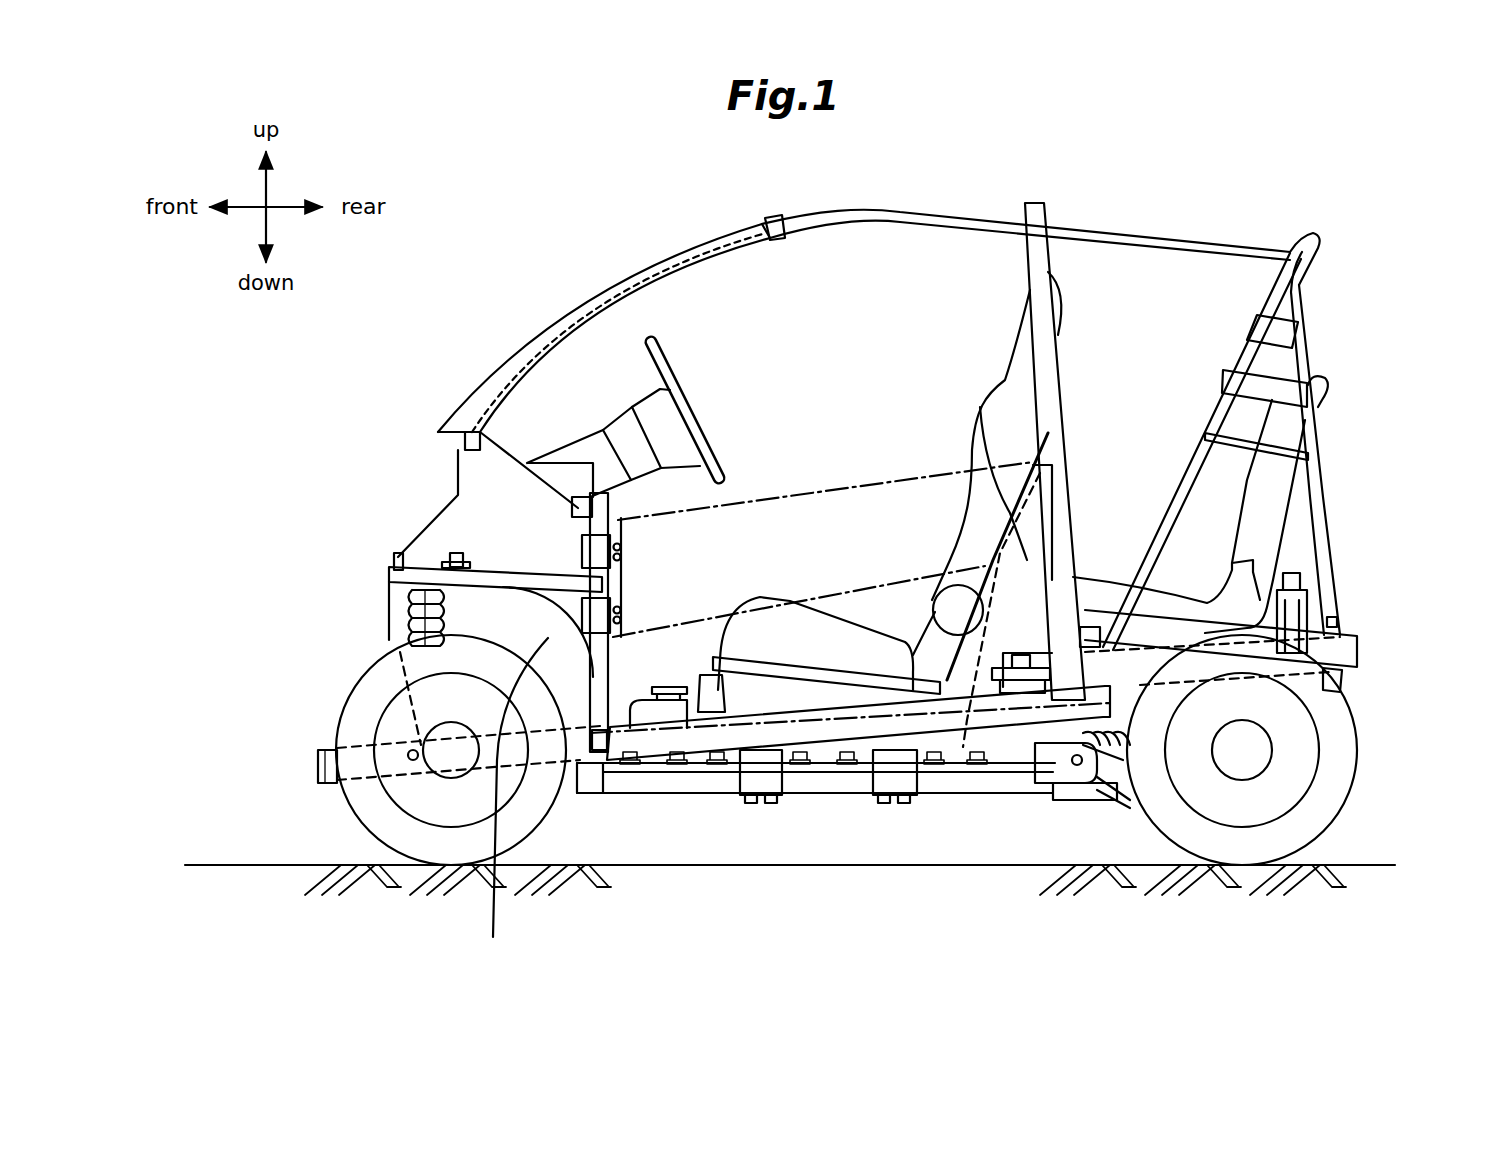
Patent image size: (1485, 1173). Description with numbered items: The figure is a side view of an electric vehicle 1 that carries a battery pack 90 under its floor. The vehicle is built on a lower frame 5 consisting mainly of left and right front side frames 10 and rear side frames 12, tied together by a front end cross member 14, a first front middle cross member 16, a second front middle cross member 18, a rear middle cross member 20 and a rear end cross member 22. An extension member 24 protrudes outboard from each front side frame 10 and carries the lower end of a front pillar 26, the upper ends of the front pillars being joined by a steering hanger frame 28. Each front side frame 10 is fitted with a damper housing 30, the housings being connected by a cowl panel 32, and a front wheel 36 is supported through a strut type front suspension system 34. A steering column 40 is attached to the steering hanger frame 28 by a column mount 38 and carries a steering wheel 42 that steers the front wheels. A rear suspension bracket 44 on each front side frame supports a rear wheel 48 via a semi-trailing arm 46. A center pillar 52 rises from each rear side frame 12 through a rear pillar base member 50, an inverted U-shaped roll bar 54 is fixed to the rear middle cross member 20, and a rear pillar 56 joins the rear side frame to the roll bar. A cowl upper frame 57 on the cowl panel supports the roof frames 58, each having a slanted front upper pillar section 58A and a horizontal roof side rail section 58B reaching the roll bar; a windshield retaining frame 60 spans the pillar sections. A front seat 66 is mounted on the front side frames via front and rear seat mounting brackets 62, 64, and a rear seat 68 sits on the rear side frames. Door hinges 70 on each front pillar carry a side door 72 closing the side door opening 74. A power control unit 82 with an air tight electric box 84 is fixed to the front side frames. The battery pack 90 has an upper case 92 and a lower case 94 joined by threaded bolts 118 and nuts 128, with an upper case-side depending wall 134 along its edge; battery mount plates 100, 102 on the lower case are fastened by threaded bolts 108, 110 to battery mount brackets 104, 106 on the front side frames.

The electric vehicle 1 is at (1187, 170).
The lower frame 5 is at (962, 737).
The front side frame 10 is at (670, 740).
The rear side frame 12 is at (1345, 655).
The front end cross member 14 is at (318, 768).
The first front middle cross member 16 is at (414, 762).
The second front middle cross member 18 is at (583, 780).
The rear middle cross member 20 is at (1090, 640).
The rear end cross member 22 is at (1345, 675).
The extension member 24 is at (614, 770).
The front pillar 26 is at (600, 680).
The steering hanger frame 28 is at (592, 505).
The damper housing 30 is at (513, 794).
The cowl panel 32 is at (452, 530).
The strut type front suspension system 34 is at (427, 630).
The front wheel 36 is at (355, 694).
The column mount 38 is at (550, 475).
The steering column 40 is at (622, 428).
The steering wheel 42 is at (668, 352).
The rear suspension bracket 44 is at (1040, 790).
The semi-trailing arm 46 is at (1125, 797).
The rear wheel 48 is at (1323, 808).
The rear pillar base member 50 is at (1022, 750).
The center pillar 52 is at (1050, 355).
The roll bar 54 is at (1182, 462).
The rear pillar 56 is at (1322, 498).
The cowl upper frame 57 is at (468, 438).
The roof frame 58 is at (867, 212).
The front upper pillar section 58A is at (660, 255).
The roof side rail section 58B is at (976, 222).
The windshield retaining frame 60 is at (540, 340).
The front seat mounting bracket 62 is at (706, 740).
The rear seat mounting bracket 64 is at (845, 640).
The front seat 66 is at (808, 598).
The rear seat 68 is at (1187, 603).
The door hinge 70 is at (595, 615).
The side door 72 is at (860, 470).
The side door opening 74 is at (888, 330).
The power control unit 82 is at (980, 560).
The electric box 84 is at (980, 407).
The battery pack 90 is at (790, 520).
The upper case 92 is at (735, 690).
The lower case 94 is at (840, 780).
The battery mount plate 100 is at (745, 800).
The battery mount plate 102 is at (893, 800).
The battery mount bracket 104 is at (795, 695).
The battery mount bracket 106 is at (890, 652).
The threaded bolt 108 is at (770, 803).
The threaded bolt 110 is at (903, 803).
The threaded bolt 118 is at (1013, 645).
The nut 128 is at (960, 733).
The upper case-side depending wall 134 is at (808, 767).